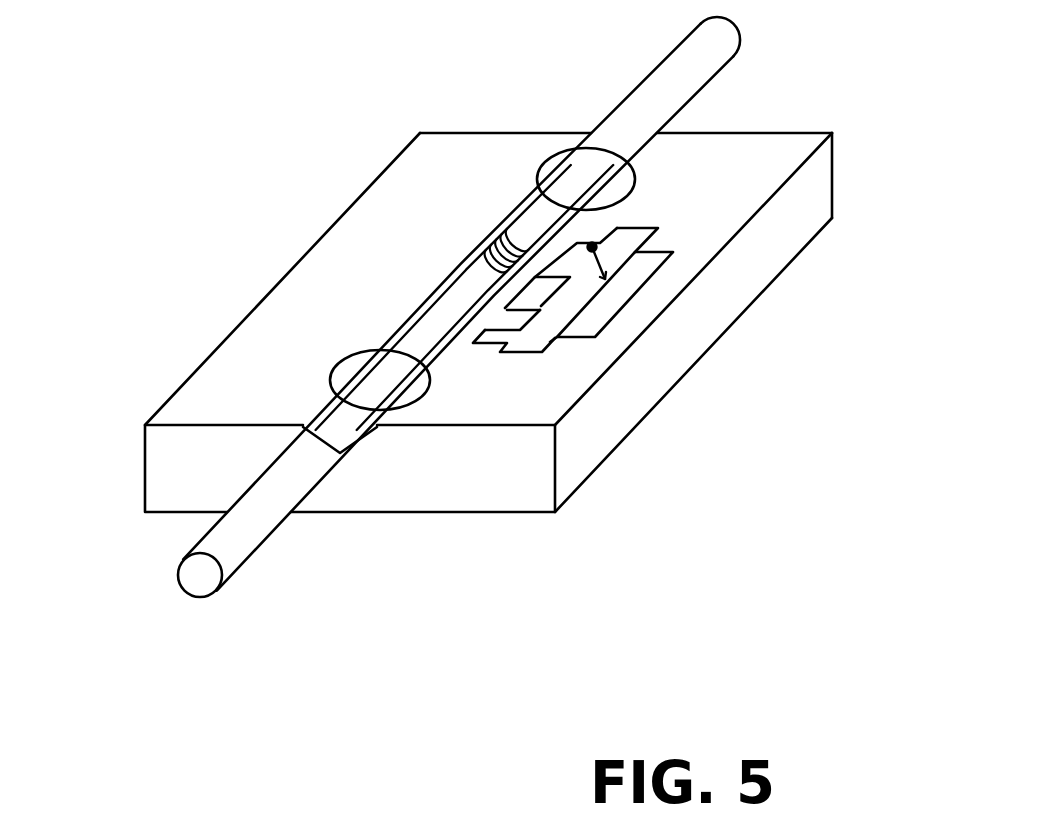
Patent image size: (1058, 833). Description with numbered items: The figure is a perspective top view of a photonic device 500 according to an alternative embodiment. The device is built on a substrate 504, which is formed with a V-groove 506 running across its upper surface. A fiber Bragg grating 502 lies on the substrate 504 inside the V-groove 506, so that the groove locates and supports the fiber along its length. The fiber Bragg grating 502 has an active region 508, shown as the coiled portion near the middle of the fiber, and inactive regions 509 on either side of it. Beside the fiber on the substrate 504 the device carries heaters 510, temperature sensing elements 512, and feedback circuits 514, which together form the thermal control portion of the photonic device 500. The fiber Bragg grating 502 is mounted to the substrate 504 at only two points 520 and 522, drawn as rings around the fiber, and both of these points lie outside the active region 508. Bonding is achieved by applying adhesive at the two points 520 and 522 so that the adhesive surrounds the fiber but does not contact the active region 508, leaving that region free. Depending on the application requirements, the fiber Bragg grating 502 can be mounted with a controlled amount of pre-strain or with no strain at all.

The photonic device 500 is at (912, 509).
The fiber Bragg grating 502 is at (235, 543).
The substrate 504 is at (435, 493).
The V-groove 506 is at (303, 428).
The active region 508 is at (483, 236).
The inactive regions 509 is at (530, 210).
The heaters 510 is at (490, 352).
The temperature sensing elements 512 is at (600, 240).
The feedback circuits 514 is at (613, 295).
The mounting point 520 is at (584, 148).
The mounting point 522 is at (340, 356).